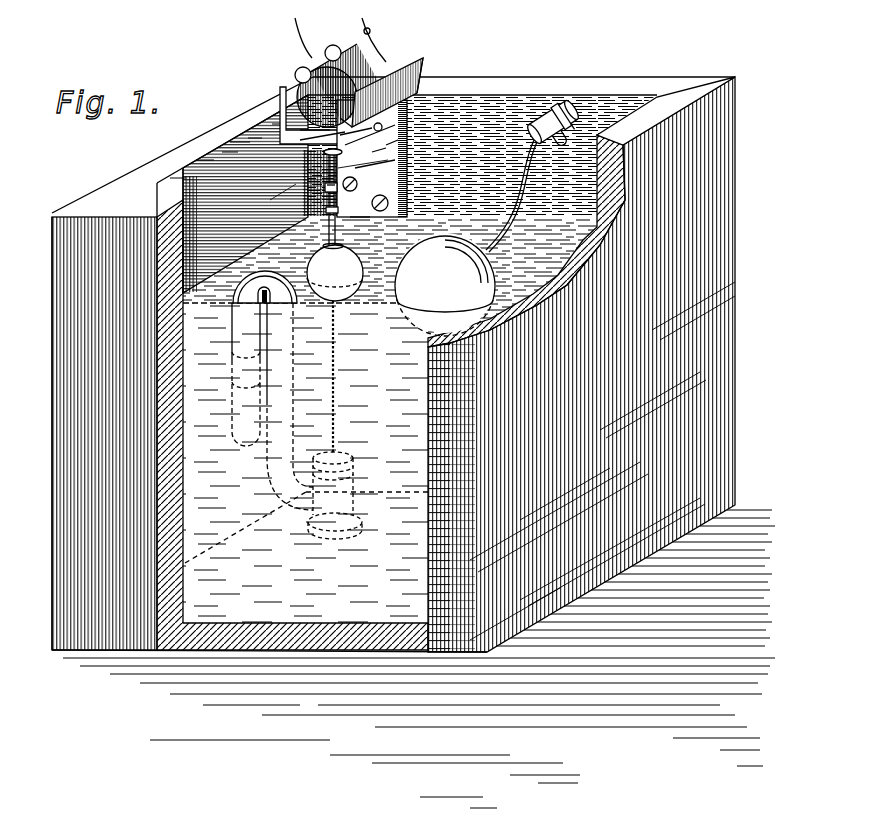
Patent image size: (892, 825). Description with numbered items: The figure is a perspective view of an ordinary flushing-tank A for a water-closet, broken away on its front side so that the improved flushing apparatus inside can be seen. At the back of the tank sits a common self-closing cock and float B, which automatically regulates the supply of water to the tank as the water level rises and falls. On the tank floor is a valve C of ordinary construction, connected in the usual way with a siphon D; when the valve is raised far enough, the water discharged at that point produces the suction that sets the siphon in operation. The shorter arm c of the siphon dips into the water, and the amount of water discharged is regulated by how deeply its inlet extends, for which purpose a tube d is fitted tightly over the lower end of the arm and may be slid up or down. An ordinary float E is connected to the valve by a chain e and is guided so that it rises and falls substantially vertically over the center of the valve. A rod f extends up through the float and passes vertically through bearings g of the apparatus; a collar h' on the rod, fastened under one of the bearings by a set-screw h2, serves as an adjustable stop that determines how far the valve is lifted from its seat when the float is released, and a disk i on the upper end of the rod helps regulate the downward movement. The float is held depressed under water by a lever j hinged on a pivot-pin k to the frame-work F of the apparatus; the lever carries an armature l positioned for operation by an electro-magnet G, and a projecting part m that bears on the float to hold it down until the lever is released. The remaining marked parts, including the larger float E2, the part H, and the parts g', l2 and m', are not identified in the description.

The tank A is at (398, 432).
The self-closing cock and float B is at (537, 174).
The valve C is at (335, 486).
The siphon D is at (268, 397).
The float E is at (341, 287).
The second float E2 is at (445, 284).
The frame-work F is at (316, 115).
The electro-magnet G is at (385, 63).
The switch box H is at (412, 190).
The shorter arm of siphon c is at (235, 321).
The tube d is at (232, 414).
The chain e is at (341, 376).
The rod f is at (340, 214).
The bearings g is at (370, 230).
The wall marking g' is at (283, 194).
The collar h' is at (375, 176).
The set-screw h2 is at (327, 185).
The disk i is at (255, 152).
The lever j is at (340, 118).
The pivot-pin k is at (387, 92).
The armature l is at (423, 62).
The bracket bar l2 is at (315, 141).
The projecting part m is at (392, 149).
The contact m' is at (381, 160).